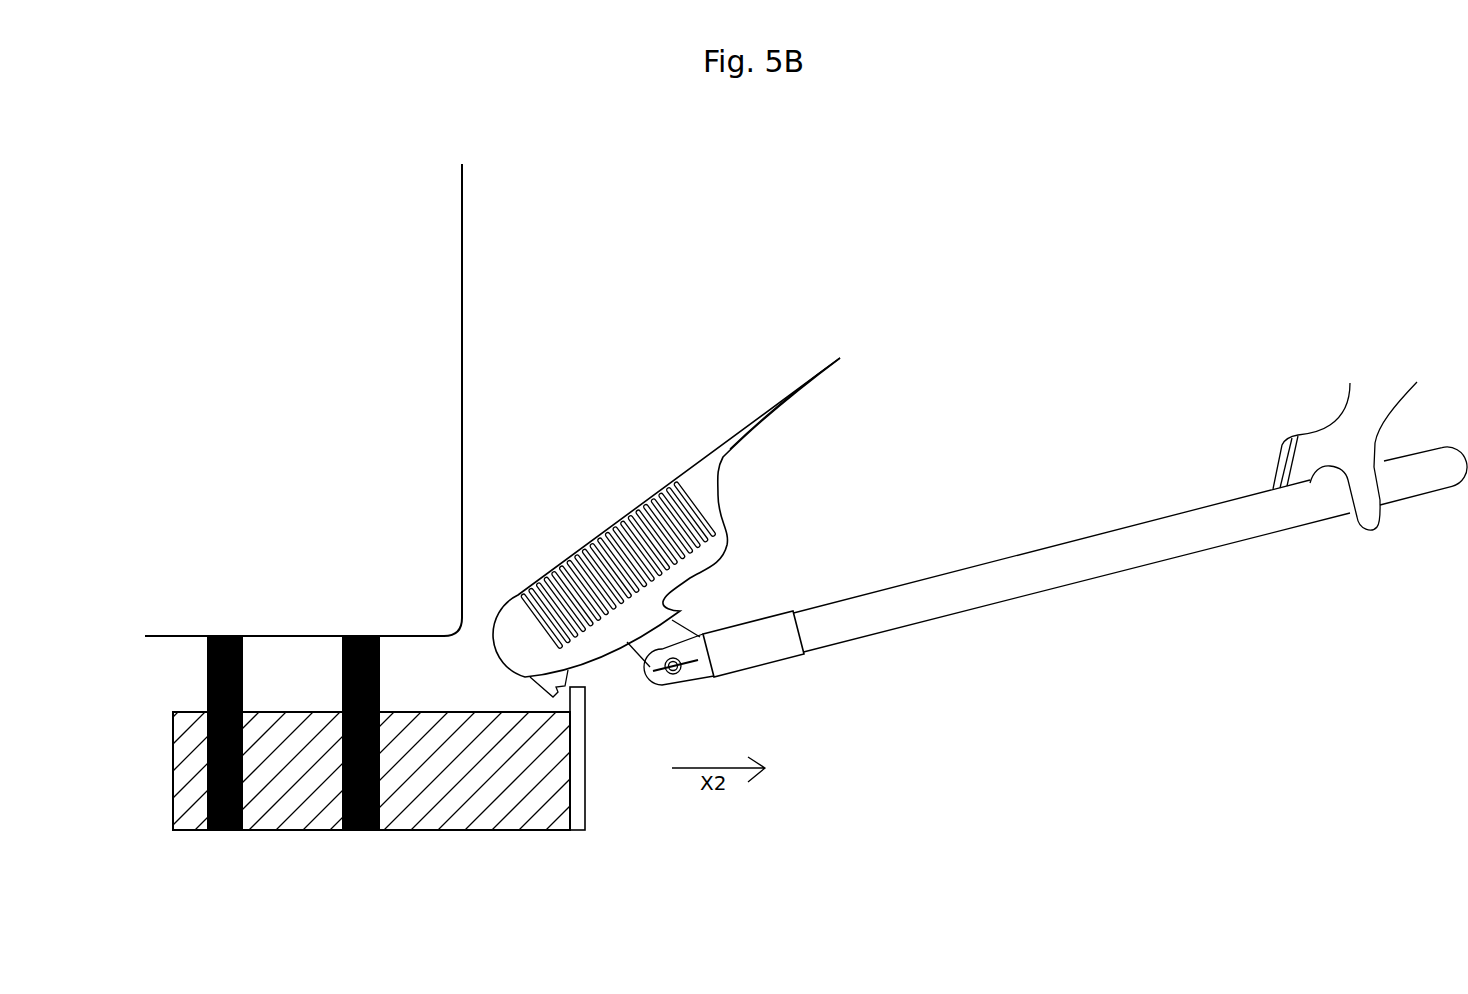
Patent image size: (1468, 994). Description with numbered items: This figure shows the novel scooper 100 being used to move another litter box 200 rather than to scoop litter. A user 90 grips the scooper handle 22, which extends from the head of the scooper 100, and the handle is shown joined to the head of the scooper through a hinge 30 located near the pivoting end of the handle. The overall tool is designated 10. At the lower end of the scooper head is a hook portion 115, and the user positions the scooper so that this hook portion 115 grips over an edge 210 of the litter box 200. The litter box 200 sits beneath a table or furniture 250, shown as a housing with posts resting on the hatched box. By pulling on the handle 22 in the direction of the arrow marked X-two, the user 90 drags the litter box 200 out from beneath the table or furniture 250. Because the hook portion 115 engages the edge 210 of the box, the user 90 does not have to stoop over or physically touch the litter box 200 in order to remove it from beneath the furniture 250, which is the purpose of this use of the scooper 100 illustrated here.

The hair treatment tool 10 is at (925, 538).
The scooper handle 22 is at (1328, 503).
The hinge 30 is at (682, 670).
The user 90 is at (1333, 442).
The scooper 100 is at (641, 638).
The hook portion 115 is at (563, 687).
The litter box 200 is at (422, 822).
The edge 210 is at (578, 705).
The table or furniture 250 is at (336, 369).